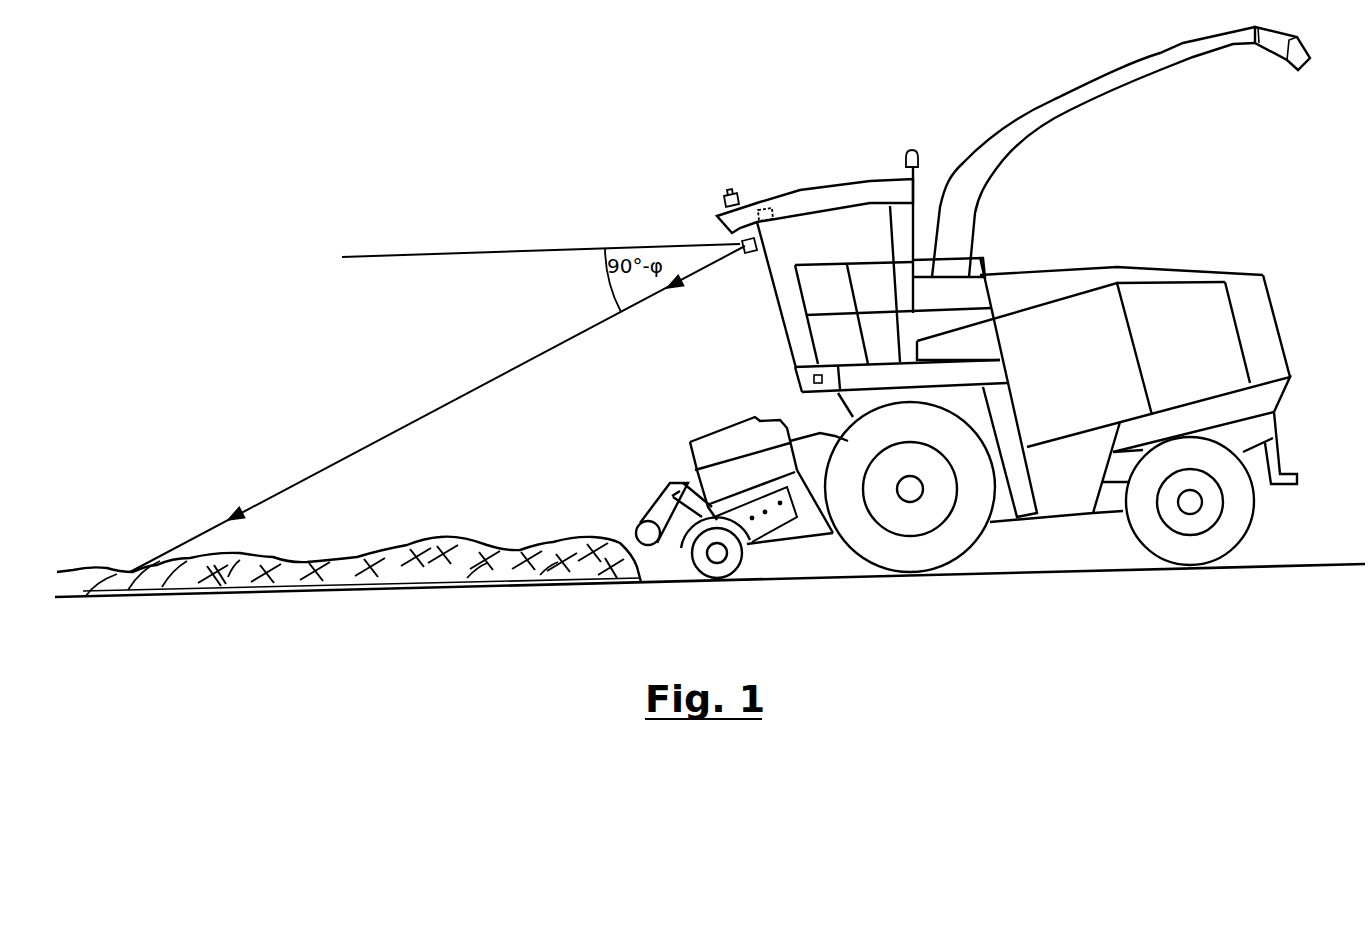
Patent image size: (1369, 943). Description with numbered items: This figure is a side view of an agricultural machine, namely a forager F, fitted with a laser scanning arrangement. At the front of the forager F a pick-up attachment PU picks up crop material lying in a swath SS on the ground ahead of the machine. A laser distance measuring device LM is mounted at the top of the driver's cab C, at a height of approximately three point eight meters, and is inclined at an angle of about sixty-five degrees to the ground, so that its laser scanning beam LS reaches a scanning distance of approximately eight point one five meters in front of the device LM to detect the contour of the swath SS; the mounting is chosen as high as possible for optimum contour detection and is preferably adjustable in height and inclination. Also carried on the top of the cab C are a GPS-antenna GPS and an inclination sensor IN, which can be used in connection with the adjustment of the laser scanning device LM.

The forager F is at (973, 302).
The driver's cab C is at (827, 238).
The GPS-antenna GPS is at (733, 194).
The inclination sensor IN is at (776, 209).
The laser distance measuring device LM is at (752, 252).
The laser scanning beam LS is at (422, 414).
The pick-up attachment PU is at (690, 456).
The swath SS is at (426, 576).